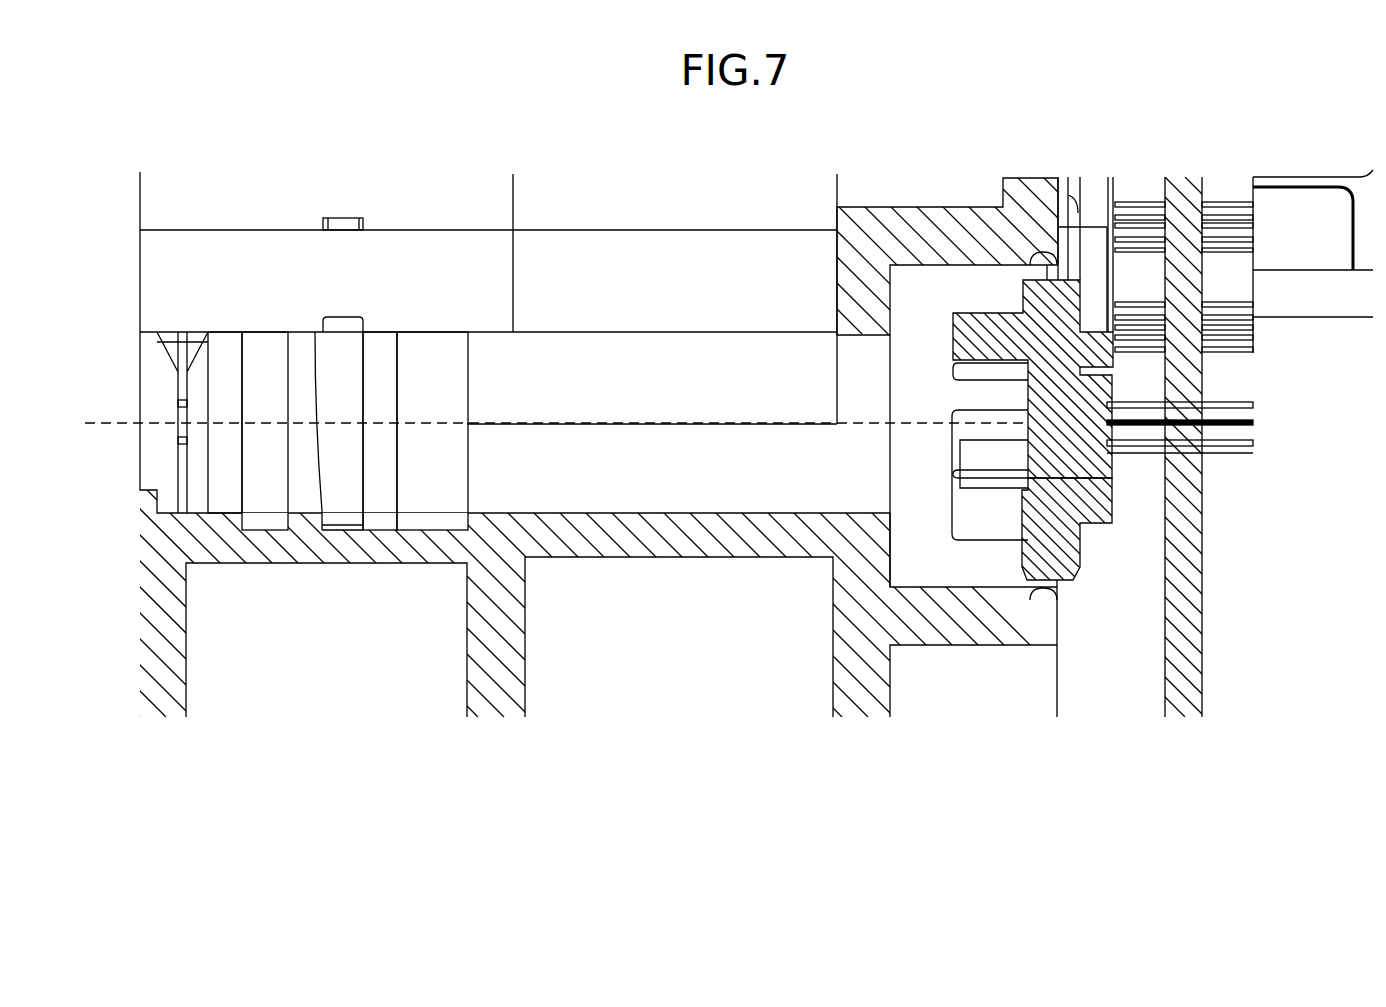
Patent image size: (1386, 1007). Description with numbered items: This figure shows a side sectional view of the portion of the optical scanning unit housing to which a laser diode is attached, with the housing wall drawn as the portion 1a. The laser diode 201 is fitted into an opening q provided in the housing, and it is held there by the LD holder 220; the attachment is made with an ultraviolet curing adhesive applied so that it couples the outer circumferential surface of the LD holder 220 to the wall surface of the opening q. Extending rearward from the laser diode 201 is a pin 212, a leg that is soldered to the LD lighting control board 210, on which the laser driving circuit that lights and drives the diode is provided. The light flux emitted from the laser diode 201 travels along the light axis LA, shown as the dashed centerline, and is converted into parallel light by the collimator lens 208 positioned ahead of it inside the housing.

The lens barrel housing 1a is at (978, 610).
The collimator lens 208 is at (342, 500).
The laser diode 201 is at (1055, 420).
The LD holder 220 is at (1080, 540).
The LD lighting control board 210 is at (1195, 607).
The pin 212 is at (1232, 405).
The opening q is at (929, 289).
The light axis LA is at (107, 423).